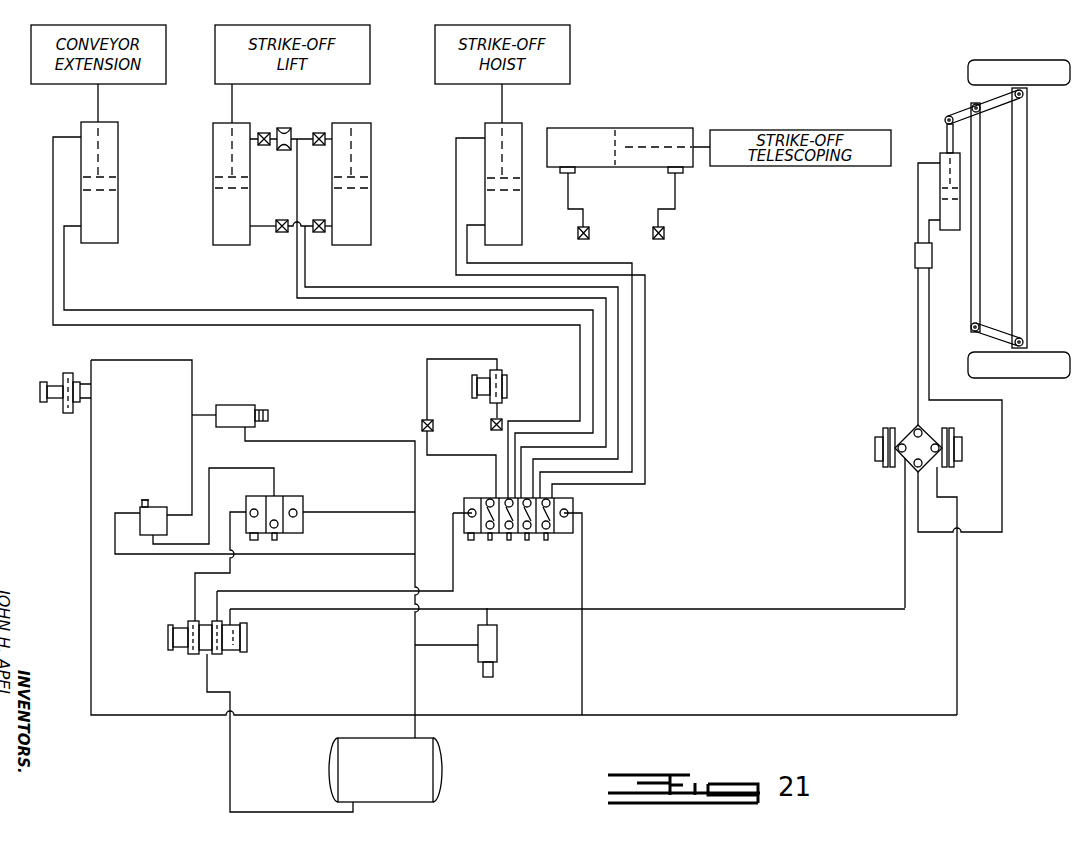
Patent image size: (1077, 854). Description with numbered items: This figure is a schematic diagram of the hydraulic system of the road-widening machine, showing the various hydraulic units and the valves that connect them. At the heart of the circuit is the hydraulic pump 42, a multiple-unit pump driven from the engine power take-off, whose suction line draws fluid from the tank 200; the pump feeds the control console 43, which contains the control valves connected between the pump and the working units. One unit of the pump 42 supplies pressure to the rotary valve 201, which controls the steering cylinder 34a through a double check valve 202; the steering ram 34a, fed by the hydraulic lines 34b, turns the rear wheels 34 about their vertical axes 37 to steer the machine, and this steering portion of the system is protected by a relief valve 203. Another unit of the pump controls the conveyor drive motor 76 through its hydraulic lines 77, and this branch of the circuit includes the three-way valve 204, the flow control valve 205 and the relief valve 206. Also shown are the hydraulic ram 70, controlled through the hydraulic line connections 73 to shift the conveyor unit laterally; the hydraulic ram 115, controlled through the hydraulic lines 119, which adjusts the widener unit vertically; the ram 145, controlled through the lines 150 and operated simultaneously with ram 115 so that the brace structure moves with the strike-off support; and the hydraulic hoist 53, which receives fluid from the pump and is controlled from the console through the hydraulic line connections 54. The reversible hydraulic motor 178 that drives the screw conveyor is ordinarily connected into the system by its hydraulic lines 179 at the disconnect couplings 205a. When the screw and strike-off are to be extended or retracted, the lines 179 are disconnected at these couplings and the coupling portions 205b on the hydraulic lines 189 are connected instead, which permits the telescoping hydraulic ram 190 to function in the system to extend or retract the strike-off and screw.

The hydraulic ram 70 is at (119, 165).
The hydraulic line connections 73 is at (53, 172).
The hydraulic ram 115 is at (220, 232).
The ram 145 is at (372, 232).
The hydraulic lines 119 is at (262, 133).
The lines 150 is at (318, 133).
The hydraulic ram or hoist 53 is at (515, 212).
The hydraulic line connections 54 is at (456, 203).
The hydraulic ram 190 is at (632, 128).
The hydraulic lines 189 is at (570, 192).
The coupling portions 205b is at (590, 238).
The rear wheels 34 is at (1010, 368).
The vertical axes 37 is at (1023, 96).
The hydraulic ram 34a is at (940, 205).
The hydraulic lines 34b is at (918, 190).
The double check valve 202 is at (915, 254).
The rotary valve 201 is at (905, 465).
The hydraulic motor 76 is at (68, 373).
The hydraulic lines 77 is at (91, 458).
The relief valve 206 is at (240, 408).
The flow control valve 205 is at (153, 517).
The three-way valve 204 is at (303, 500).
The hydraulic pump 42 is at (190, 655).
The relief valve 203 is at (497, 648).
The tank 200 is at (441, 752).
The control console 43 is at (573, 503).
The hydraulic lines 179 is at (427, 397).
The reversible hydraulic motor 178 is at (502, 376).
The disconnect couplings 205a is at (491, 430).